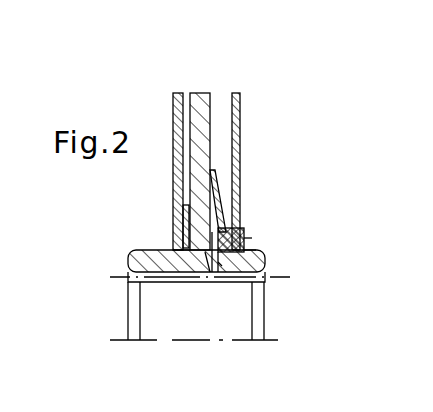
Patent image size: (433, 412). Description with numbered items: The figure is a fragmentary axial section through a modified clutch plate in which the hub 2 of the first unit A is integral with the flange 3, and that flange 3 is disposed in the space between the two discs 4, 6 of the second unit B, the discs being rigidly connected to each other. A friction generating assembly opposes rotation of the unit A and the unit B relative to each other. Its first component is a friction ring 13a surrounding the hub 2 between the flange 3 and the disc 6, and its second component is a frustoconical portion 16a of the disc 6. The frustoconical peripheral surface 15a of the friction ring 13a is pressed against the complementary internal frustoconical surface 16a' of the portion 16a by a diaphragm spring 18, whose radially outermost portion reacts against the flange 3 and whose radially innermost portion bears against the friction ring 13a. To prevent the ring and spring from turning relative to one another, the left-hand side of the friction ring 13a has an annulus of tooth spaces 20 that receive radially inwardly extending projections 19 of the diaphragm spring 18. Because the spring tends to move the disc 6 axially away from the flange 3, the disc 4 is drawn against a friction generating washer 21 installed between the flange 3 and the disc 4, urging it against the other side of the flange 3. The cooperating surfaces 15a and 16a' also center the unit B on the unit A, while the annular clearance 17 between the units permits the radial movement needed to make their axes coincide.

The first unit A is at (121, 318).
The second unit B is at (243, 86).
The hub 2 is at (265, 281).
The flange 3 is at (205, 145).
The disc 4 is at (173, 122).
The disc 6 is at (243, 108).
The friction ring 13a is at (255, 252).
The frustoconical peripheral surface 15a is at (252, 240).
The portion of the disc 16a is at (264, 224).
The frustoconical internal surface 16a' is at (271, 322).
The annular clearance 17 is at (178, 248).
The diaphragm spring 18 is at (215, 198).
The projections 19 is at (207, 260).
The tooth spaces 20 is at (215, 262).
The friction generating washer 21 is at (184, 212).